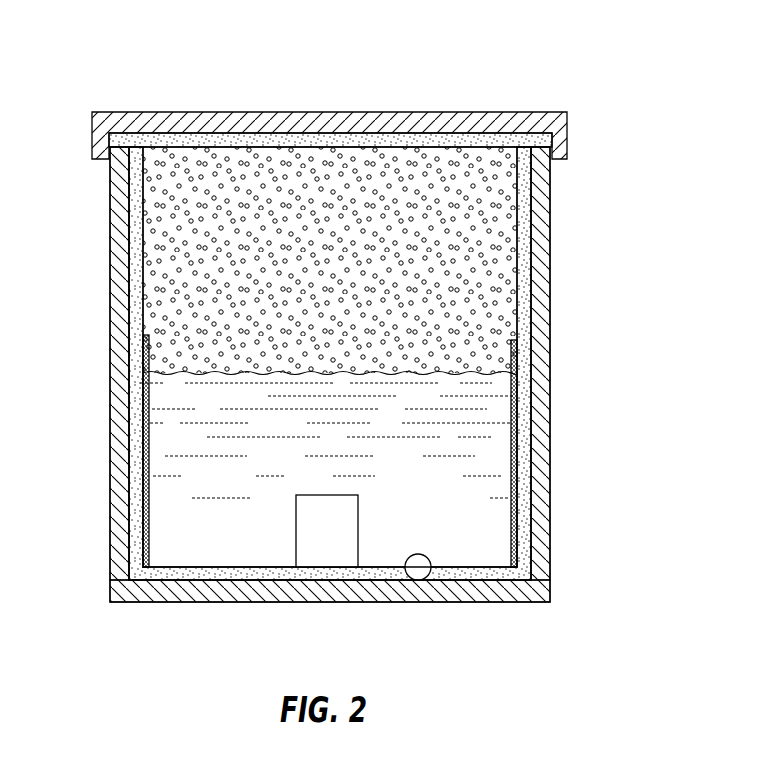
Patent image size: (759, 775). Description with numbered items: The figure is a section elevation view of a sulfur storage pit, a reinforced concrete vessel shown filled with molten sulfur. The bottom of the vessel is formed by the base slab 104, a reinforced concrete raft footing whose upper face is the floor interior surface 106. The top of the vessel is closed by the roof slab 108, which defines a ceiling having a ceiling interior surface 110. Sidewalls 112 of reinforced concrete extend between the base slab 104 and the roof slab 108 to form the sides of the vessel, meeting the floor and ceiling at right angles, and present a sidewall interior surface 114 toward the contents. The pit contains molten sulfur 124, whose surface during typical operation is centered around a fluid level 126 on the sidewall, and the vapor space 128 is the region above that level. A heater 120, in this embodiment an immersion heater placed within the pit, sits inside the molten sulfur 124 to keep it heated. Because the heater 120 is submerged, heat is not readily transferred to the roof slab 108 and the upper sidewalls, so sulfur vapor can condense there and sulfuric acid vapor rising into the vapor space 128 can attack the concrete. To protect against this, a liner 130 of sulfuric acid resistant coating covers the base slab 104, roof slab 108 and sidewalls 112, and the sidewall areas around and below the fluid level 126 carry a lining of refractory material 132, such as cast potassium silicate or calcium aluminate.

The base slab 104 is at (264, 601).
The floor interior surface 106 is at (405, 578).
The roof slab 108 is at (380, 117).
The ceiling interior surface 110 is at (343, 146).
The sidewalls 112 is at (110, 348).
The sidewall interior surface 114 is at (143, 247).
The heater 120 is at (290, 520).
The molten sulfur 124 is at (450, 498).
The fluid level 126 is at (320, 373).
The vapor space 128 is at (357, 257).
The liner 130 is at (527, 190).
The refractory material 132 is at (513, 426).